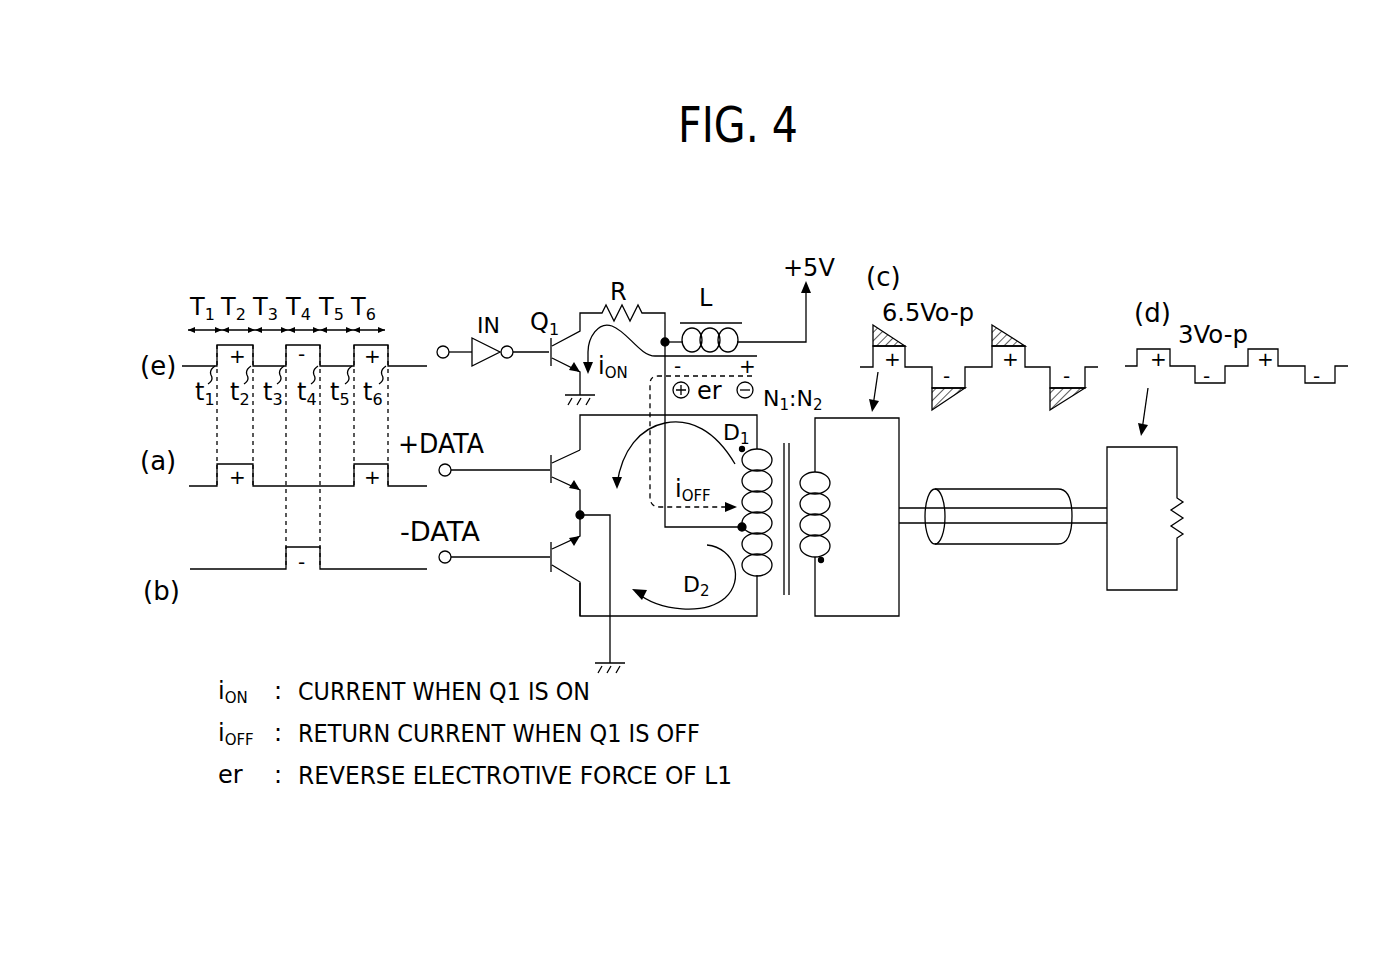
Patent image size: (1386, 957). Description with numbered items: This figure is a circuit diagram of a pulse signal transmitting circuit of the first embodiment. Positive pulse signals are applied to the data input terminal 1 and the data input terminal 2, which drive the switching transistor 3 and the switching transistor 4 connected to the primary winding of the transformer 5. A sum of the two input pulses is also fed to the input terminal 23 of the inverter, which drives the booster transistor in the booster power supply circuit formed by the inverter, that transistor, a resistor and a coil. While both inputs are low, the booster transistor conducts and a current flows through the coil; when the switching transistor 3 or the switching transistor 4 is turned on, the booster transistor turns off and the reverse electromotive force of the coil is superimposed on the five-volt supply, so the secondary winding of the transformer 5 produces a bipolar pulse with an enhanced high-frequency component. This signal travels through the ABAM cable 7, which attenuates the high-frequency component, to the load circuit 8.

The input terminal 23 is at (443, 358).
The data input terminal 1 is at (443, 476).
The data input terminal 2 is at (443, 563).
The switching transistor 3 is at (567, 449).
The switching transistor 4 is at (564, 583).
The transformer 5 is at (786, 610).
The ABAM cable 7 is at (992, 487).
The load circuit 8 is at (1183, 501).